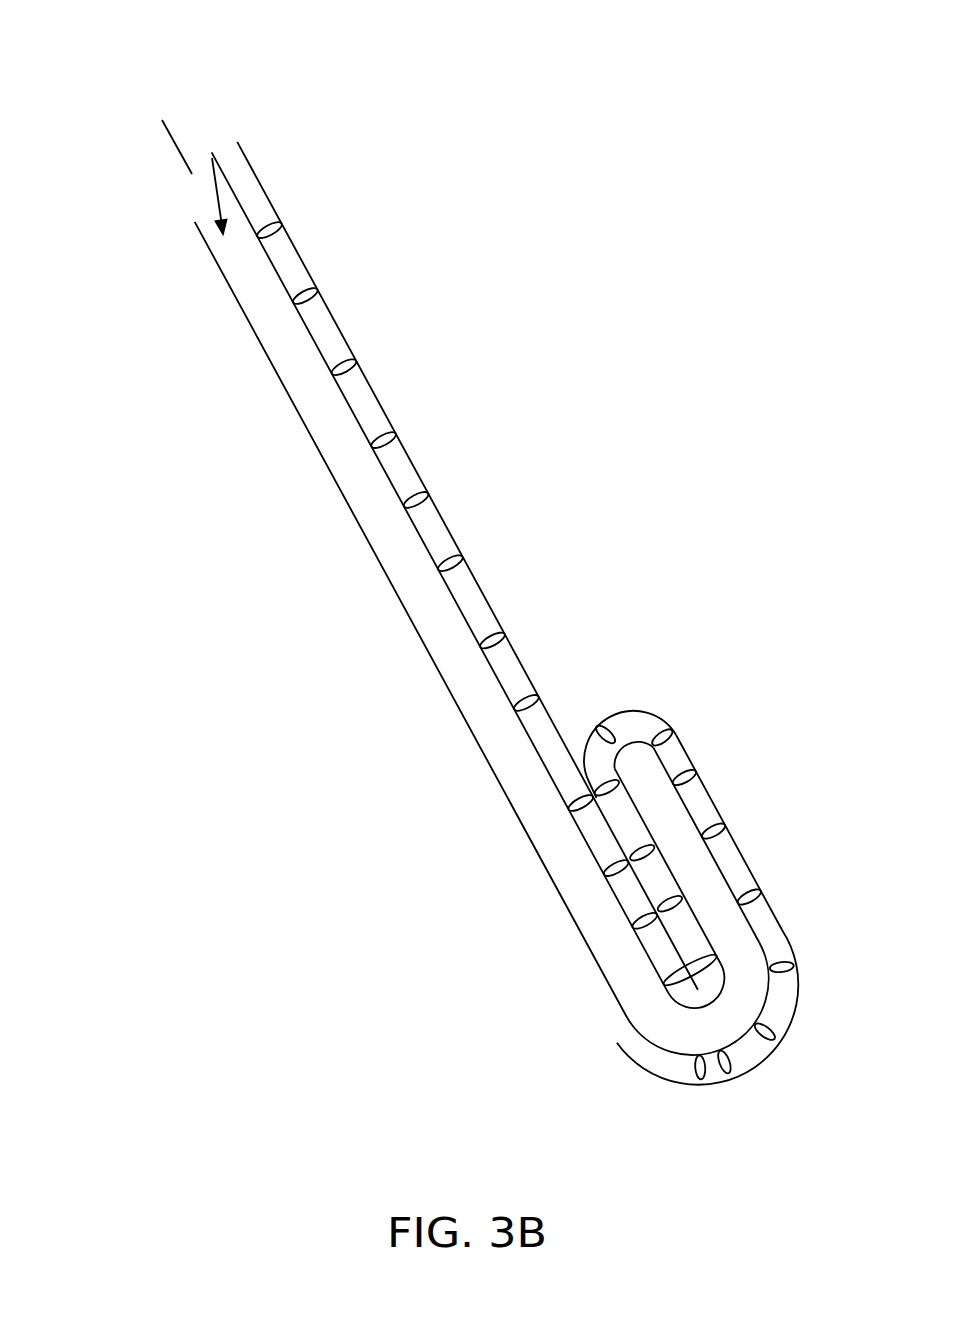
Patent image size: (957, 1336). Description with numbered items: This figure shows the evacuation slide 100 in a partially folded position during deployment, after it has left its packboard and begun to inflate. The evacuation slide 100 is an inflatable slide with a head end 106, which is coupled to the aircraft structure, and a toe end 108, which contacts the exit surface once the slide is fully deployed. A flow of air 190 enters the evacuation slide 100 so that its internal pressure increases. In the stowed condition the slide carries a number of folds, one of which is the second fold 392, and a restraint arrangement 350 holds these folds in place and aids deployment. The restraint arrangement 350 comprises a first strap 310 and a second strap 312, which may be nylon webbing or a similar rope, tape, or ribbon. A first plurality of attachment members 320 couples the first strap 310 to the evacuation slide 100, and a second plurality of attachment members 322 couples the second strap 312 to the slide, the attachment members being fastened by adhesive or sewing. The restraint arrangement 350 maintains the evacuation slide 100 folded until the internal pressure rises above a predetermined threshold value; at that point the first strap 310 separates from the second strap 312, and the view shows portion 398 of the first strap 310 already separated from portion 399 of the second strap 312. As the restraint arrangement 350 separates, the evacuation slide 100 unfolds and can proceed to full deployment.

The evacuation slide 100 is at (293, 365).
The head end 106 is at (197, 116).
The toe end 108 is at (618, 712).
The flow of air 190 is at (190, 173).
The first strap 310 is at (255, 174).
The second strap 312 is at (680, 1080).
The first plurality of attachment members 320 is at (347, 370).
The second plurality of attachment members 322 is at (613, 787).
The restraint arrangement 350 is at (632, 298).
The second fold 392 is at (728, 1078).
The portion of first strap 398 is at (430, 354).
The portion of second strap 399 is at (782, 828).